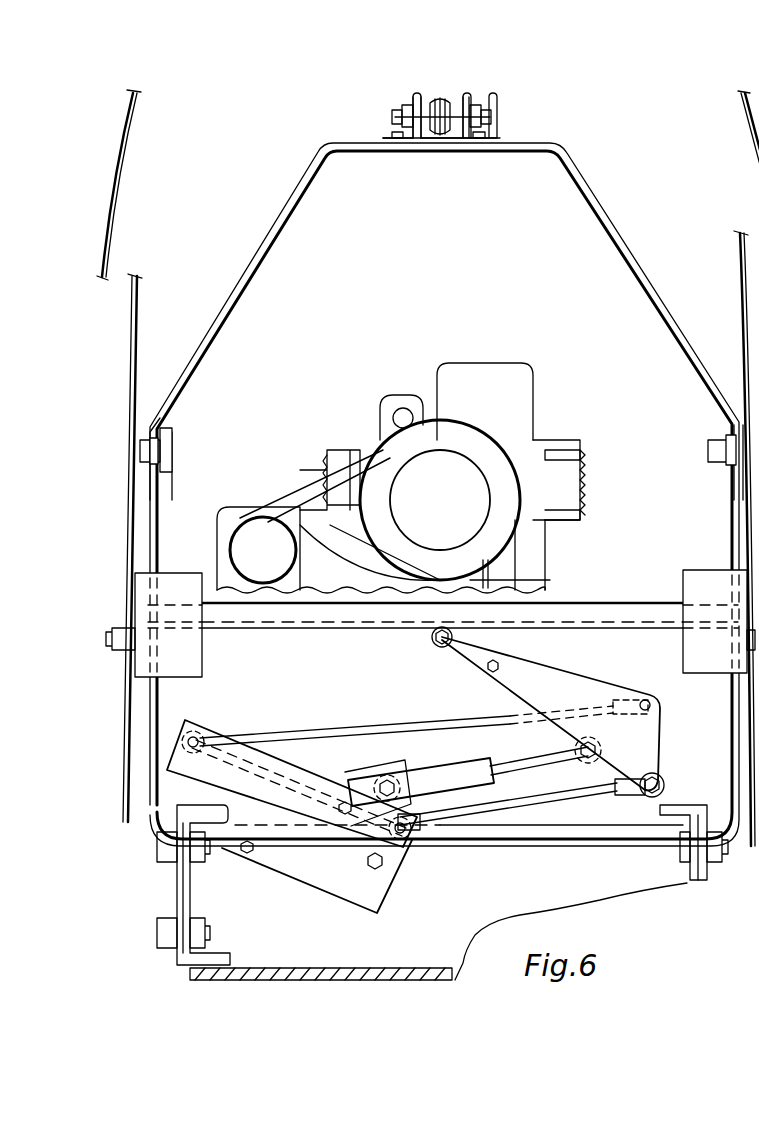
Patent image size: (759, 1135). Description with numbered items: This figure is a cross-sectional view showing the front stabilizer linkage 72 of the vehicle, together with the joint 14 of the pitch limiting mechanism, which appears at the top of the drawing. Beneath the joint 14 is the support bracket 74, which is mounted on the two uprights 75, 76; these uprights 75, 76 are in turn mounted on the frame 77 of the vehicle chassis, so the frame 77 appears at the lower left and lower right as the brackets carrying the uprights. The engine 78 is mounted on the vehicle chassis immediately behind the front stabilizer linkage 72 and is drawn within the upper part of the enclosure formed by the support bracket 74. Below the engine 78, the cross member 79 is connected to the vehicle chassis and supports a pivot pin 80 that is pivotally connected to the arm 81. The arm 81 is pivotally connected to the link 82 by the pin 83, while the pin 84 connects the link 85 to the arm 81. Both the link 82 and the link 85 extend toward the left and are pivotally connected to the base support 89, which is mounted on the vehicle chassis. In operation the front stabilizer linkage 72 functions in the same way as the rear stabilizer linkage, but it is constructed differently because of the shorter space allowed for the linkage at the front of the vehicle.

The joint 14 is at (450, 128).
The front stabilizer linkage 72 is at (563, 712).
The support bracket 74 is at (600, 210).
The upright 75 is at (732, 503).
The upright 76 is at (157, 497).
The frame 77 is at (178, 884).
The engine 78 is at (548, 427).
The cross member 79 is at (338, 620).
The pivot pin 80 is at (437, 645).
The arm 81 is at (505, 694).
The link 82 is at (388, 724).
The pin 83 is at (655, 705).
The pin 84 is at (664, 778).
The link 85 is at (560, 800).
The base support 89 is at (298, 776).